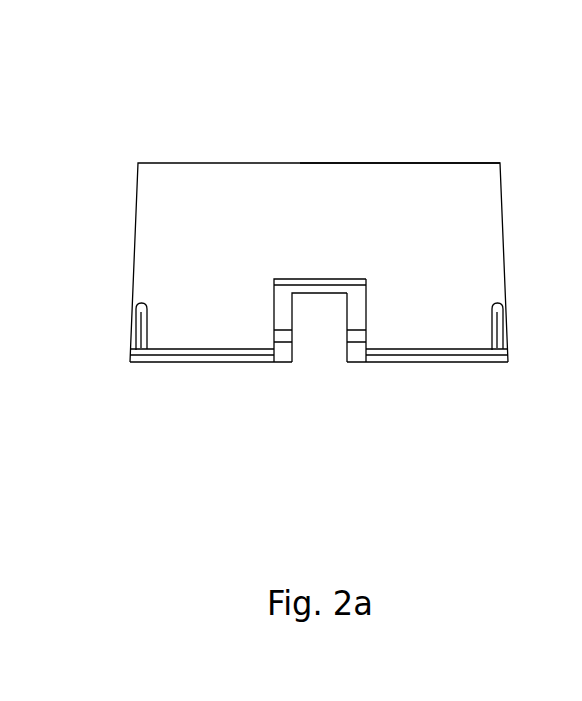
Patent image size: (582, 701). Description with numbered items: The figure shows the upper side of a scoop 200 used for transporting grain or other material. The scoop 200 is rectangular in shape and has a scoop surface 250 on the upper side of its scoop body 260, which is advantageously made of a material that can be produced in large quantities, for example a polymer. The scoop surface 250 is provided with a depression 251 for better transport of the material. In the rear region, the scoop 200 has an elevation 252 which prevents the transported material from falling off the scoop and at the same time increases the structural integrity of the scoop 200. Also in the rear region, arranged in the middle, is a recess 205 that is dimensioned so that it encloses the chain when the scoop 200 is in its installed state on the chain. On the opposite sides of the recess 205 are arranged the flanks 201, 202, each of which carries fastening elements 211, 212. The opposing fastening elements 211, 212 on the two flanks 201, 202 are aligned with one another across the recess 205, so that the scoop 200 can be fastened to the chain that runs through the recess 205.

The scoop 200 is at (322, 223).
The scoop surface 250 is at (258, 164).
The scoop body 260 is at (405, 158).
The depression 251 is at (314, 245).
The elevation 252 is at (172, 361).
The flank 201 is at (280, 362).
The flank 202 is at (352, 363).
The fastening element 211 is at (273, 340).
The fastening element 212 is at (388, 365).
The recess 205 is at (316, 328).